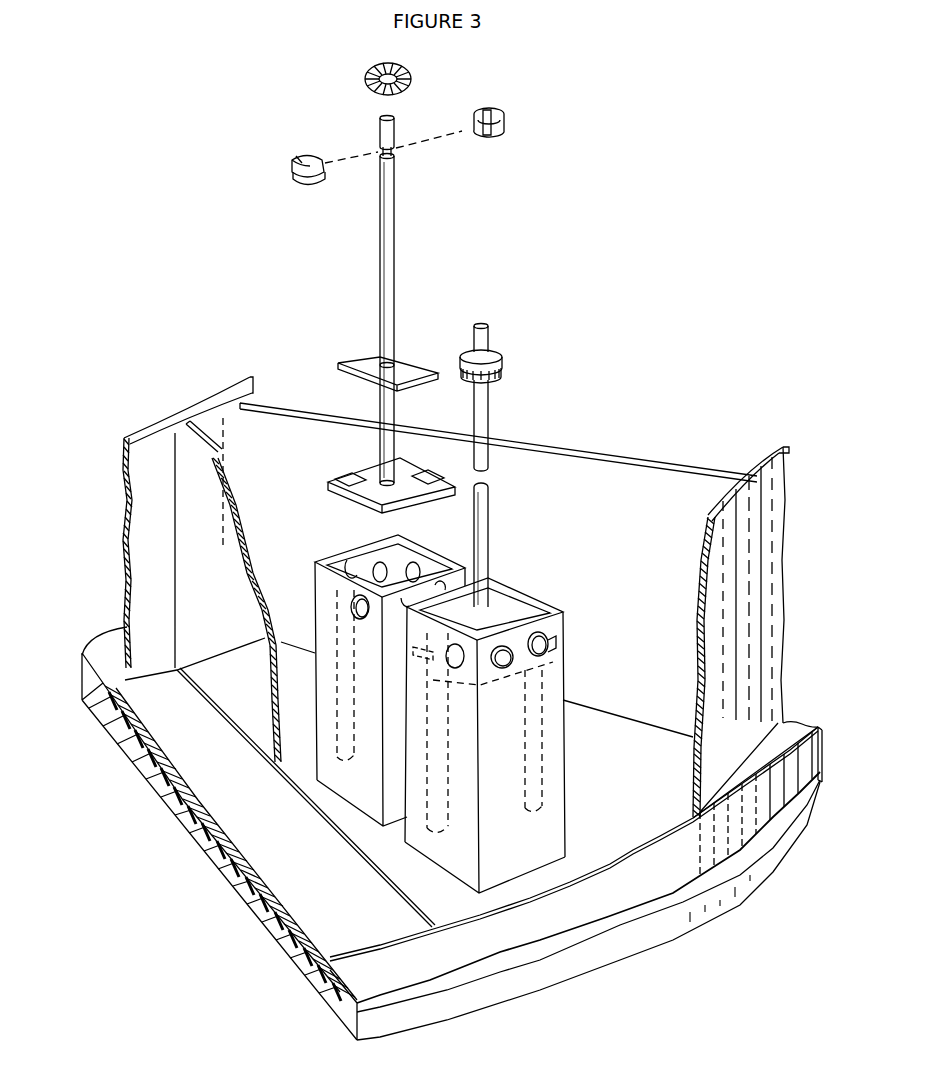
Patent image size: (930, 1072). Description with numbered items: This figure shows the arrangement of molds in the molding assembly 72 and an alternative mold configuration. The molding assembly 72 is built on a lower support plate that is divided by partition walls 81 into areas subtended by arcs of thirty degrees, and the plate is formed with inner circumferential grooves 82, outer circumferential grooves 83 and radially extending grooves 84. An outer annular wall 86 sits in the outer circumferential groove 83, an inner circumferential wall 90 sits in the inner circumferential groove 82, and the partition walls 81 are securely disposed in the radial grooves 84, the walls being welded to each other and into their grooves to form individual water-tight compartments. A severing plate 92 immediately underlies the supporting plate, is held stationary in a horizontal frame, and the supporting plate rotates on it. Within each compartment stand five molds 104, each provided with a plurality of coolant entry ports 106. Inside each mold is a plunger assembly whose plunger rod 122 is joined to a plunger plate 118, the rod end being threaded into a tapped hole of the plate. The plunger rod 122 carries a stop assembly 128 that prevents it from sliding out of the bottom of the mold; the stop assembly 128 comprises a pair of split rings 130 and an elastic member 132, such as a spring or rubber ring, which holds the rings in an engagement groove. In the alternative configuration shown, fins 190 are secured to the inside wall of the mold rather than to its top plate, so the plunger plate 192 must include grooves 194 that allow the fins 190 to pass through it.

The molding assembly 72 is at (651, 412).
The partition wall 81 is at (580, 448).
The inner circumferential groove 82 is at (108, 686).
The outer circumferential groove 83 is at (633, 850).
The radially extending groove 84 is at (418, 912).
The outer annular wall 86 is at (723, 786).
The inner circumferential wall 90 is at (142, 493).
The severing plate 92 is at (613, 950).
The mold 104 is at (565, 704).
The coolant entry port 106 is at (563, 638).
The plunger plate 118 is at (490, 683).
The plunger rod 122 is at (397, 258).
The stop assembly 128 is at (526, 370).
The split ring 130 is at (505, 122).
The elastic member 132 is at (412, 80).
The fin 190 is at (345, 757).
The plunger plate 192 is at (407, 473).
The groove 194 is at (340, 503).